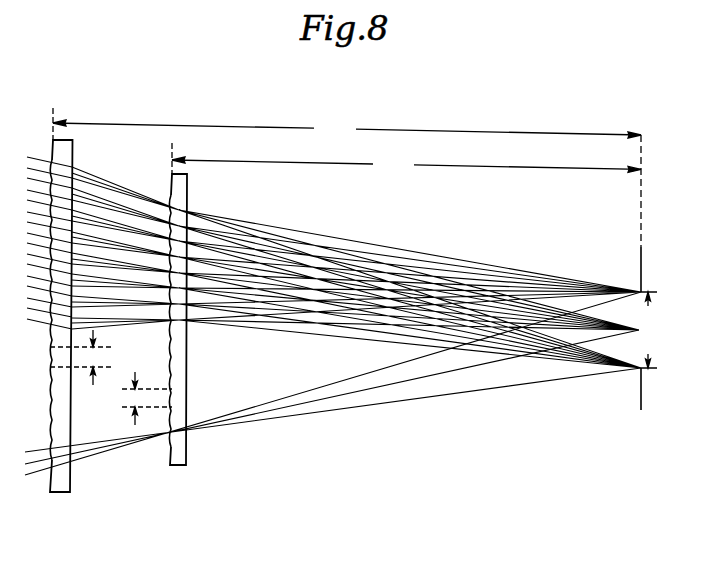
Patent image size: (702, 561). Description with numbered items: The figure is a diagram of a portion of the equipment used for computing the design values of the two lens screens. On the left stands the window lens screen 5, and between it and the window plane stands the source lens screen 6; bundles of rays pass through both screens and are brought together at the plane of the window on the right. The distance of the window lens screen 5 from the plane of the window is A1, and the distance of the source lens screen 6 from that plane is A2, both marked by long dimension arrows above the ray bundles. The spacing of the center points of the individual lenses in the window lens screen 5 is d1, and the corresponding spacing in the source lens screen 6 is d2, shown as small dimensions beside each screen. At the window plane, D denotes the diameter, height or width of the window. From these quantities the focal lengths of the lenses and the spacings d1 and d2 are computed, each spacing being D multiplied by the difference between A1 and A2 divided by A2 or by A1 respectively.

The window lens screen 5 is at (61, 334).
The source lens screen 6 is at (178, 336).
The distance of the window lens screen from the plane of the window A1 is at (347, 141).
The distance of the source lens screen from the plane of the window A2 is at (406, 164).
The diameter of the window D is at (646, 330).
The spacing of center points of the individual lenses in the window lens screen d1 is at (88, 357).
The spacing of the center points of the individual lenses in the source lens screen d2 is at (138, 398).